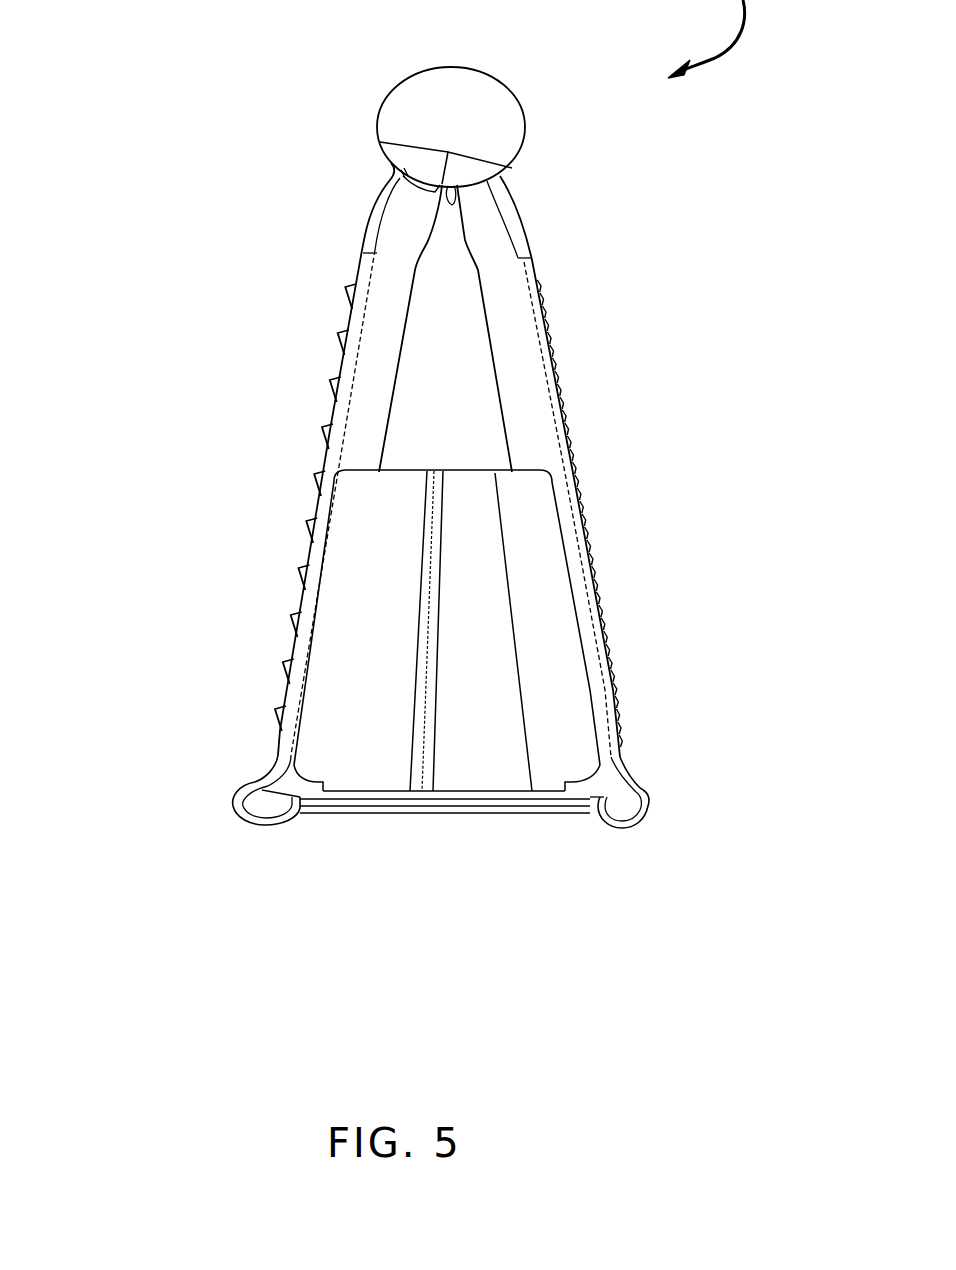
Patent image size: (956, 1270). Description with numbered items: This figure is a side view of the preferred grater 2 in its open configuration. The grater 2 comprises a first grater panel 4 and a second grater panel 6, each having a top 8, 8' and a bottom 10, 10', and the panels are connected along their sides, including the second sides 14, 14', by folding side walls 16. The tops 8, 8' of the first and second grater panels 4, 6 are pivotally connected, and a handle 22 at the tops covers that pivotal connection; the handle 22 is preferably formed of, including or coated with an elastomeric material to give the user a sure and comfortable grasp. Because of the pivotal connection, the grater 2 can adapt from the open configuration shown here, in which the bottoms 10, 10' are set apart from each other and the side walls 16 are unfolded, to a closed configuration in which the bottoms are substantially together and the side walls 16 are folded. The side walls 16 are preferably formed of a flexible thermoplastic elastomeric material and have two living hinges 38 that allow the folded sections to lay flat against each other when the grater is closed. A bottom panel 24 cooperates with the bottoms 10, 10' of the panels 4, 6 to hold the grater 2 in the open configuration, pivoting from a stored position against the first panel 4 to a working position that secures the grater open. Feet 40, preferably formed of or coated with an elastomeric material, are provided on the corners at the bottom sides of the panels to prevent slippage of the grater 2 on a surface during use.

The grater 2 is at (722, 12).
The first grater panel 4 is at (362, 250).
The second grater panel 6 is at (531, 248).
The top 8 is at (346, 118).
The top 8' is at (559, 197).
The bottom 10 is at (209, 788).
The bottom 10' is at (664, 767).
The second side 14 is at (308, 328).
The second side 14' is at (578, 328).
The folding side walls 16 is at (485, 632).
The handle 22 is at (452, 96).
The bottom panel 24 is at (450, 813).
The living hinges 38 is at (427, 558).
The feet 40 is at (262, 813).